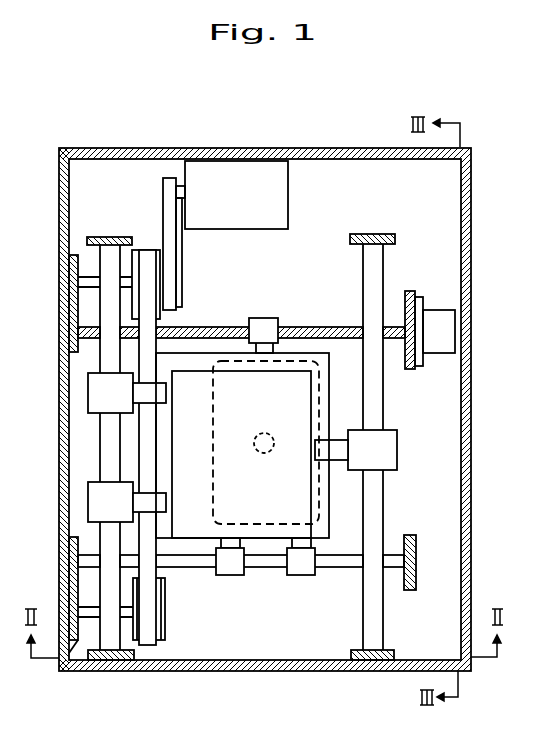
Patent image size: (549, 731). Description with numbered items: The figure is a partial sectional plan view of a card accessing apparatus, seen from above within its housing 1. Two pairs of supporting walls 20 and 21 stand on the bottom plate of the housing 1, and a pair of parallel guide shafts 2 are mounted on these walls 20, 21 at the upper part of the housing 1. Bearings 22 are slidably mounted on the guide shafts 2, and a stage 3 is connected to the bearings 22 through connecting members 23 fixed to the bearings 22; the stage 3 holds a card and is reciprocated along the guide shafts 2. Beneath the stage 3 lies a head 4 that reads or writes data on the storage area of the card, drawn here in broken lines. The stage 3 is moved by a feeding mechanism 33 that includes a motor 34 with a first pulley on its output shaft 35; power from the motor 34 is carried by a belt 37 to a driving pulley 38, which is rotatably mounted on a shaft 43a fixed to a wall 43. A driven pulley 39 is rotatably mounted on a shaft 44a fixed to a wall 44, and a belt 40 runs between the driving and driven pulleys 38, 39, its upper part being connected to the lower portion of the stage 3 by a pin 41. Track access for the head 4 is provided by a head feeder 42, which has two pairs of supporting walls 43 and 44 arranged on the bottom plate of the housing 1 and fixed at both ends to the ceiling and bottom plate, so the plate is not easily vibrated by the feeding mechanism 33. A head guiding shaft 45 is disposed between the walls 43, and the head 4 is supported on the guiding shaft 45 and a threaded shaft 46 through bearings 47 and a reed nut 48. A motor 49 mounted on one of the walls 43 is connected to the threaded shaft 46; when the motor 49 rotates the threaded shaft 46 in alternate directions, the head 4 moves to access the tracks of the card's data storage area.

The housing 1 is at (231, 151).
The guide shafts 2 is at (110, 457).
The stage 3 is at (308, 408).
The head 4 is at (321, 490).
The supporting walls 20 is at (99, 237).
The supporting walls 21 is at (368, 235).
The bearings 22 is at (98, 397).
The connecting members 23 is at (155, 394).
The feeding mechanism 33 is at (166, 197).
The motor 34 is at (284, 204).
The output shaft 35 is at (181, 187).
The belt 37 is at (182, 245).
The driving pulley 38 is at (138, 252).
The driven pulley 39 is at (165, 637).
The belt 40 is at (143, 297).
The pin 41 is at (147, 451).
The head feeder 42 is at (393, 302).
The supporting walls 43 is at (75, 314).
The shaft 43a is at (88, 277).
The supporting walls 44 is at (72, 560).
The shaft 44a is at (59, 655).
The head guiding shaft 45 is at (195, 567).
The threaded shaft 46 is at (228, 327).
The bearings 47 is at (229, 576).
The reed nut 48 is at (264, 325).
The motor 49 is at (435, 328).